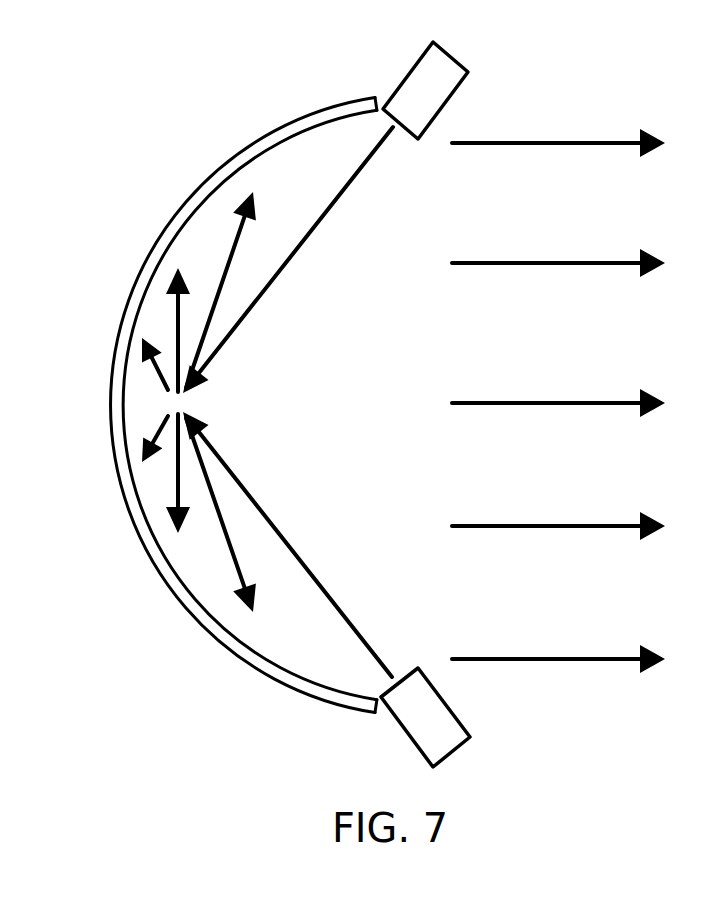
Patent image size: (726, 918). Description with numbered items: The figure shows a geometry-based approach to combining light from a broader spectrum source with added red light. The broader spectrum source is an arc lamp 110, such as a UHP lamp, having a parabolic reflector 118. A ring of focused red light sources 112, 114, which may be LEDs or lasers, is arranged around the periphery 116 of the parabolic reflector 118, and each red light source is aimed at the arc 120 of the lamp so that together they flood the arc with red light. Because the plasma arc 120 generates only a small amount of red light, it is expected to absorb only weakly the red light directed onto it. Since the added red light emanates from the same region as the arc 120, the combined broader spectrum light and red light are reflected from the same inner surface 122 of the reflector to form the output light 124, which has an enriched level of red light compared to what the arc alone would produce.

The arc lamp 110 is at (160, 88).
The focused red light source 112 is at (450, 105).
The focused red light source 114 is at (447, 698).
The periphery of the parabolic reflector 116 is at (380, 97).
The parabolic reflector 118 is at (256, 138).
The arc 120 is at (200, 402).
The inner surface 122 is at (281, 146).
The output light 124 is at (558, 401).